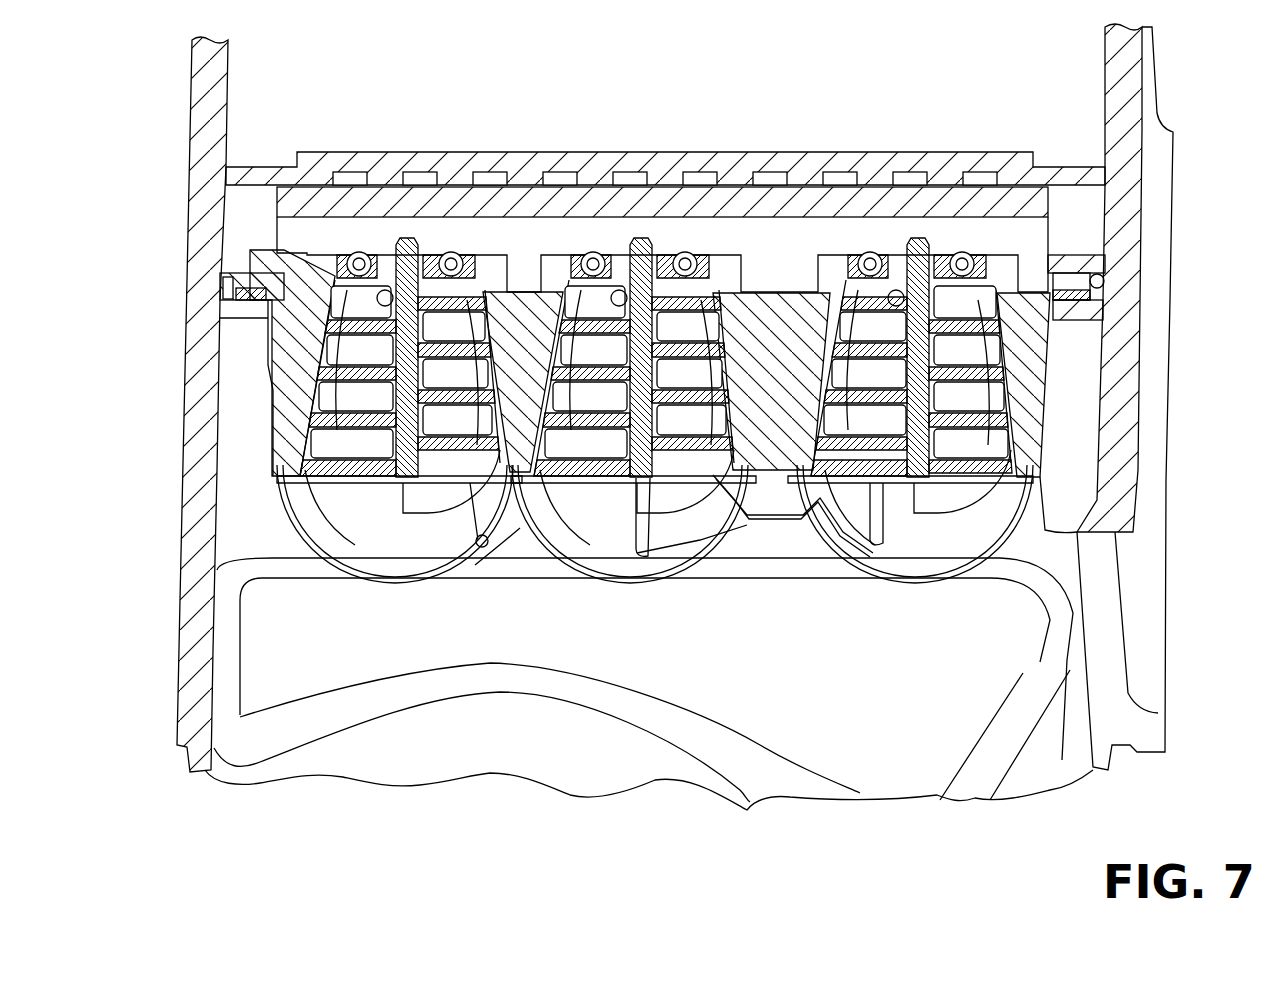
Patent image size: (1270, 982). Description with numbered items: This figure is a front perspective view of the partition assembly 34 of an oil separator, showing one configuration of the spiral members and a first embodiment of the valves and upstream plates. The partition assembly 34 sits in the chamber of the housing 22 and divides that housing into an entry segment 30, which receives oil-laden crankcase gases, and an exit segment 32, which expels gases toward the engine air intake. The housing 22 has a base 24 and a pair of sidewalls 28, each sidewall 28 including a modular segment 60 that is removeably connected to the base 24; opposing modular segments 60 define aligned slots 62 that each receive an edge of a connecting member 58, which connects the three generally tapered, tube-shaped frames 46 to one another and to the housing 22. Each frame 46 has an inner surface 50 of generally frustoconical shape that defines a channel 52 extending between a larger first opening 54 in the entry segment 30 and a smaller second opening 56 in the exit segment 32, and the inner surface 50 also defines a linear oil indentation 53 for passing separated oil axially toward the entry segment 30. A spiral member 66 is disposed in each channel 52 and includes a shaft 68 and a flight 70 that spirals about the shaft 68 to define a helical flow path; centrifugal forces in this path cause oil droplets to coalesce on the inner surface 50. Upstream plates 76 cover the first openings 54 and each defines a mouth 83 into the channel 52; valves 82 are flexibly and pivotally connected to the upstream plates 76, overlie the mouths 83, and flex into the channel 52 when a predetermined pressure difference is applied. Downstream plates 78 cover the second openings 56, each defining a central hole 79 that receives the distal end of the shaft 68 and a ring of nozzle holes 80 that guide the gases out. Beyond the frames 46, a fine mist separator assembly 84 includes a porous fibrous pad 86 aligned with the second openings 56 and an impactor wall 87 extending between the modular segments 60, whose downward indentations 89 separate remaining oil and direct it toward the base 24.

The housing 22 is at (183, 496).
The base 24 is at (263, 642).
The sidewalls 28 is at (190, 412).
The entry segment 30 is at (1120, 458).
The exit segment 32 is at (1093, 82).
The partition assembly 34 is at (266, 347).
The frames 46 is at (547, 292).
The inner surface 50 is at (1003, 398).
The channel 52 is at (718, 332).
The oil indentation 53 is at (477, 537).
The first opening 54 is at (313, 495).
The second opening 56 is at (488, 297).
The connecting member 58 is at (240, 268).
The modular segment 60 is at (225, 165).
The slots 62 is at (228, 287).
The spiral members 66 is at (586, 312).
The shaft 68 is at (410, 378).
The flight 70 is at (879, 350).
The upstream plates 76 is at (597, 553).
The downstream plates 78 is at (433, 263).
The central hole 79 is at (398, 255).
The nozzle holes 80 is at (358, 268).
The valves 82 is at (657, 540).
The mouth 83 is at (638, 522).
The fine mist separator assembly 84 is at (342, 155).
The fibrous pad 86 is at (452, 200).
The impactor wall 87 is at (528, 160).
The indentations 89 is at (352, 178).